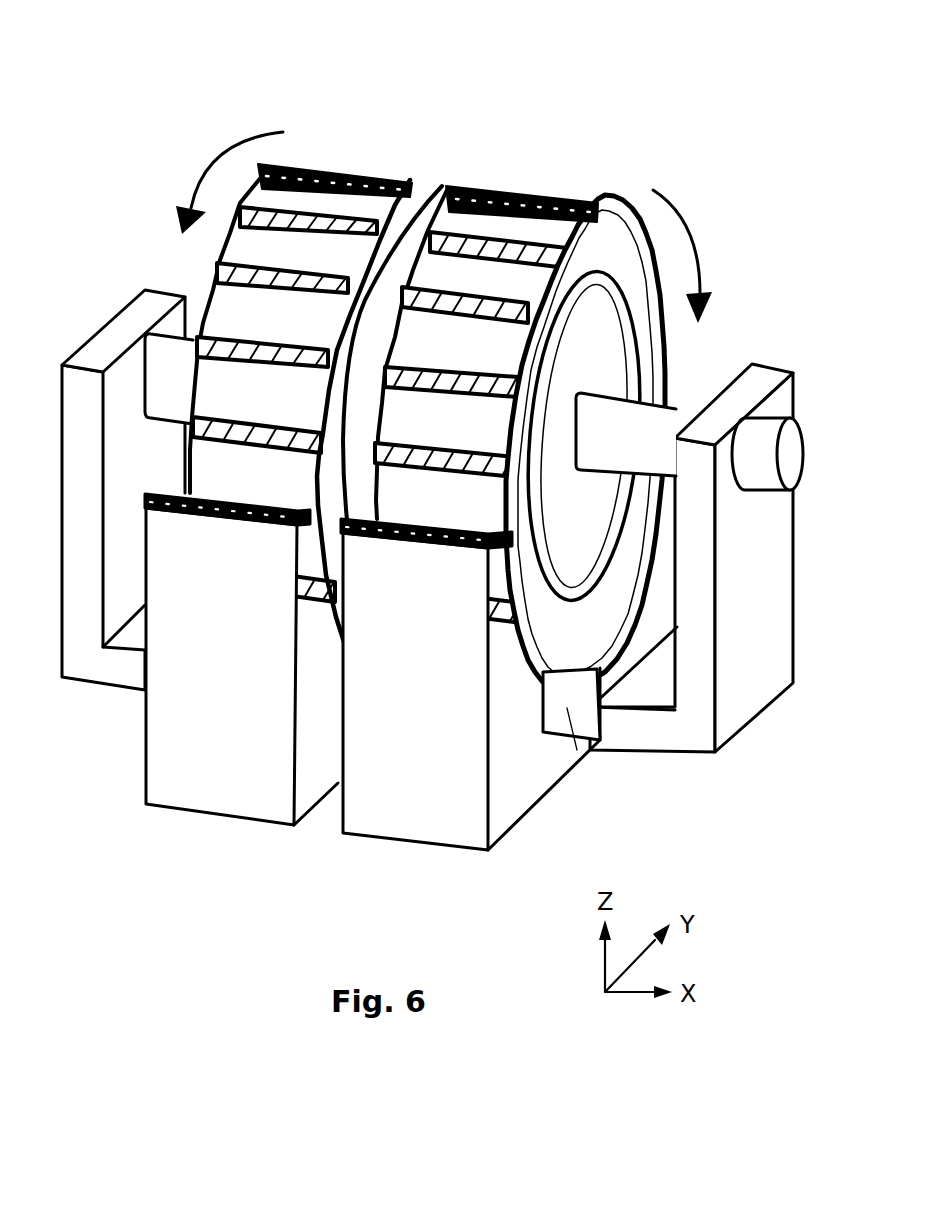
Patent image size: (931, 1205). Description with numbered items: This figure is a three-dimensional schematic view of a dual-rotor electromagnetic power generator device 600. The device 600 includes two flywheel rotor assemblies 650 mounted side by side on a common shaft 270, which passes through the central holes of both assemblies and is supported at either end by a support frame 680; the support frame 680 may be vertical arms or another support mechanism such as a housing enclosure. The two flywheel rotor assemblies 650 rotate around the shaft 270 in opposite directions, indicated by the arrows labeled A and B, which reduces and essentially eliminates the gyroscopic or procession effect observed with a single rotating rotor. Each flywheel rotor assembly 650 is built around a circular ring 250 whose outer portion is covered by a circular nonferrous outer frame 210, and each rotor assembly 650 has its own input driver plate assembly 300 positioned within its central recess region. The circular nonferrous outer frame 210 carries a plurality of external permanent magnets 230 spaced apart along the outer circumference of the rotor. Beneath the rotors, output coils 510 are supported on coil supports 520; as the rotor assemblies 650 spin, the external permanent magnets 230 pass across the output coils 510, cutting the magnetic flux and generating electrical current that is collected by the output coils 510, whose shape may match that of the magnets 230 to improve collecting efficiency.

The electromagnetic power generator device 600 is at (522, 68).
The flywheel rotor assembly 650 is at (330, 157).
The circular ring 250 is at (626, 262).
The input driver plate assembly 300 is at (611, 379).
The external permanent magnets 230 is at (305, 348).
The circular nonferrous outer frame 210 is at (356, 396).
The shaft 270 is at (646, 446).
The support frame 680 is at (163, 470).
The coil support 520 is at (241, 727).
The output coils 510 is at (578, 757).